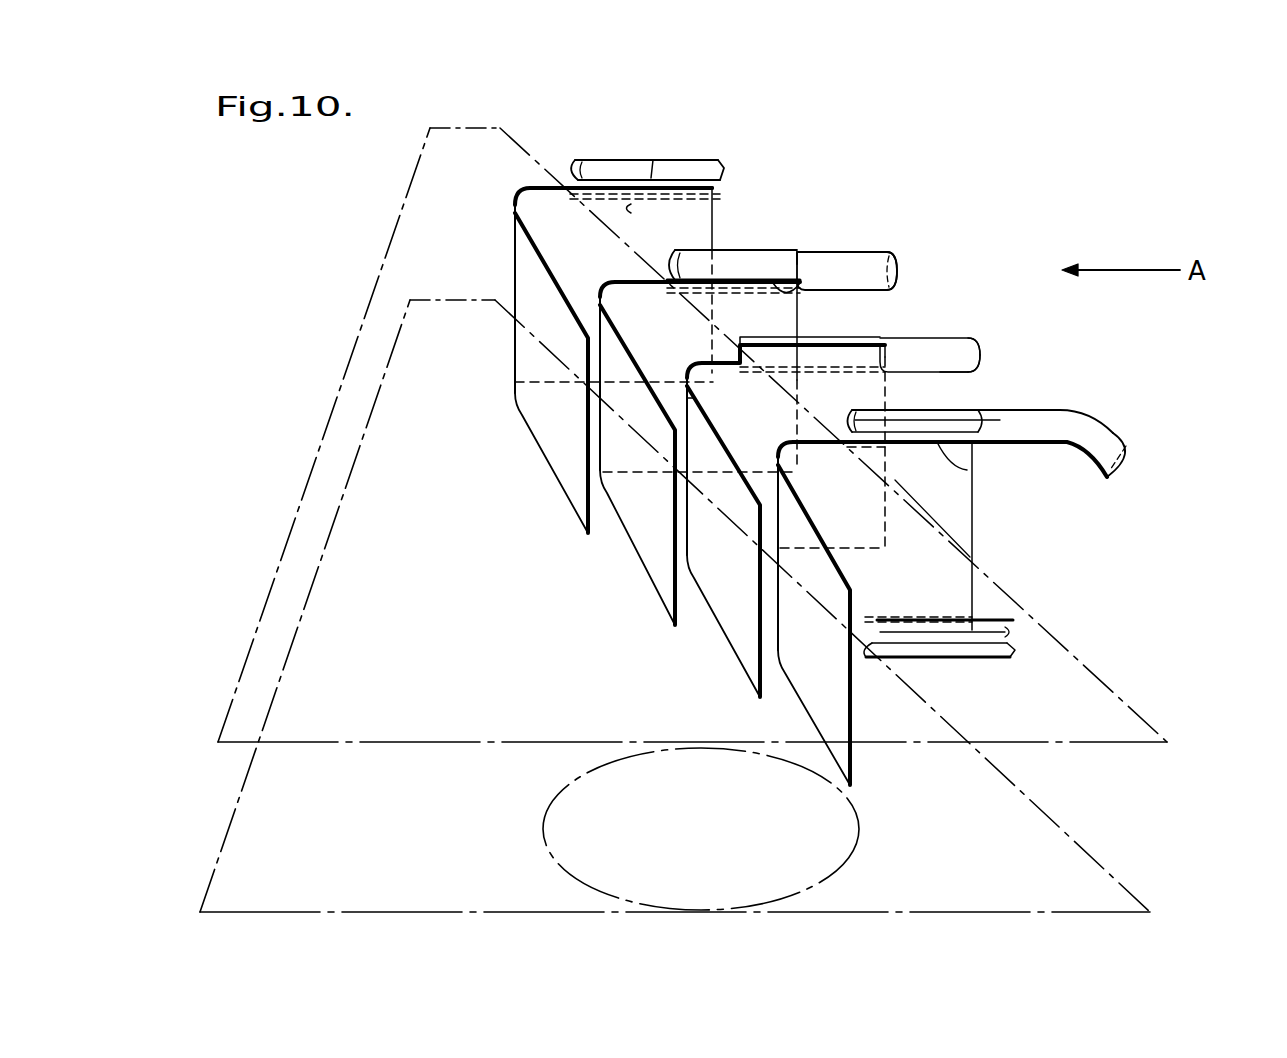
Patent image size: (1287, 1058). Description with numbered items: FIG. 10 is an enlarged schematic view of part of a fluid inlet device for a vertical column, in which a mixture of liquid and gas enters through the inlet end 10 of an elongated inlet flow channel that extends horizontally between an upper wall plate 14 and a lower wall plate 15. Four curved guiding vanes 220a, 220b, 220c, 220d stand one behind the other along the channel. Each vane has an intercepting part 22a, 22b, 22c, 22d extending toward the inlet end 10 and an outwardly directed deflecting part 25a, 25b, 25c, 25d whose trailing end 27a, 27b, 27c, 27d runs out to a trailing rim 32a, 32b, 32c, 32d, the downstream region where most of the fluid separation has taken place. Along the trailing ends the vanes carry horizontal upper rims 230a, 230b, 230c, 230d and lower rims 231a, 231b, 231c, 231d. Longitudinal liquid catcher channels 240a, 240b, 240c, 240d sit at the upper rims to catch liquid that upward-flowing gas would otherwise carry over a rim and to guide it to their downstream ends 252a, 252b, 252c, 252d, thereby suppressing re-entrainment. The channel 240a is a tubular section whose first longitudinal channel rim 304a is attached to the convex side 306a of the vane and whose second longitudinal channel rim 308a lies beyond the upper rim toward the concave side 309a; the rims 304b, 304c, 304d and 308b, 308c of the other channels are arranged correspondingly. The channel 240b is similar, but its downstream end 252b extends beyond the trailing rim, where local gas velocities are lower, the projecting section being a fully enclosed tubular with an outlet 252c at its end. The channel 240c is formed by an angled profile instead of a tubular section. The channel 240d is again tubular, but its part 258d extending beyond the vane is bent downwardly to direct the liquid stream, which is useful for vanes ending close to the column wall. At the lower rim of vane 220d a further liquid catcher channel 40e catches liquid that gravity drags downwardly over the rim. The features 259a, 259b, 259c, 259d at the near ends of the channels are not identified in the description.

The inlet end 10 is at (858, 845).
The upper wall plate 14 is at (233, 697).
The lower wall plate 15 is at (223, 853).
The intercepting part 22a is at (543, 448).
The intercepting part 22b is at (640, 572).
The intercepting part 22c is at (730, 660).
The intercepting part 22d is at (813, 733).
The vane 220a is at (525, 420).
The vane 220b is at (612, 538).
The vane 220c is at (710, 623).
The vane 220d is at (790, 706).
The deflecting part 25a is at (517, 195).
The deflecting part 25b is at (612, 280).
The deflecting part 25c is at (690, 358).
The deflecting part 25d is at (781, 440).
The trailing end 27a is at (708, 233).
The trailing end 27b is at (797, 325).
The trailing end 27c is at (877, 400).
The trailing end 27d is at (953, 533).
The trailing rim 32a is at (708, 210).
The trailing rim 32b is at (797, 303).
The trailing rim 32c is at (886, 383).
The trailing rim 32d is at (972, 518).
The liquid catcher channel 40e is at (965, 657).
The upper rim 230a is at (714, 187).
The upper rim 230b is at (847, 271).
The upper rim 230c is at (882, 348).
The upper rim 230d is at (972, 468).
The lower rim 231a is at (660, 380).
The lower rim 231b is at (753, 468).
The lower rim 231c is at (852, 537).
The lower rim 231d is at (860, 628).
The liquid catcher channel 240a is at (620, 158).
The liquid catcher channel 240b is at (852, 250).
The liquid catcher channel 240c is at (880, 345).
The liquid catcher channel 240d is at (1060, 410).
The downstream end 252a is at (722, 165).
The downstream end 252b is at (897, 264).
The outlet 252c is at (983, 340).
The downstream end 252d is at (1125, 465).
The bent part 258d is at (1115, 436).
The tube inlet end 259a is at (568, 172).
The tube inlet end 259b is at (667, 266).
The tube inlet end 259c is at (693, 398).
The tube inlet end 259d is at (845, 418).
The first longitudinal channel rim 304a is at (631, 210).
The first longitudinal channel rim 304b is at (718, 304).
The first longitudinal channel rim 304c is at (982, 380).
The first longitudinal channel rim 304d is at (904, 452).
The convex side 306a is at (516, 280).
The second longitudinal channel rim 308a is at (653, 160).
The second longitudinal channel rim 308b is at (800, 250).
The second longitudinal channel rim 308c is at (993, 360).
The concave side 309a is at (584, 228).